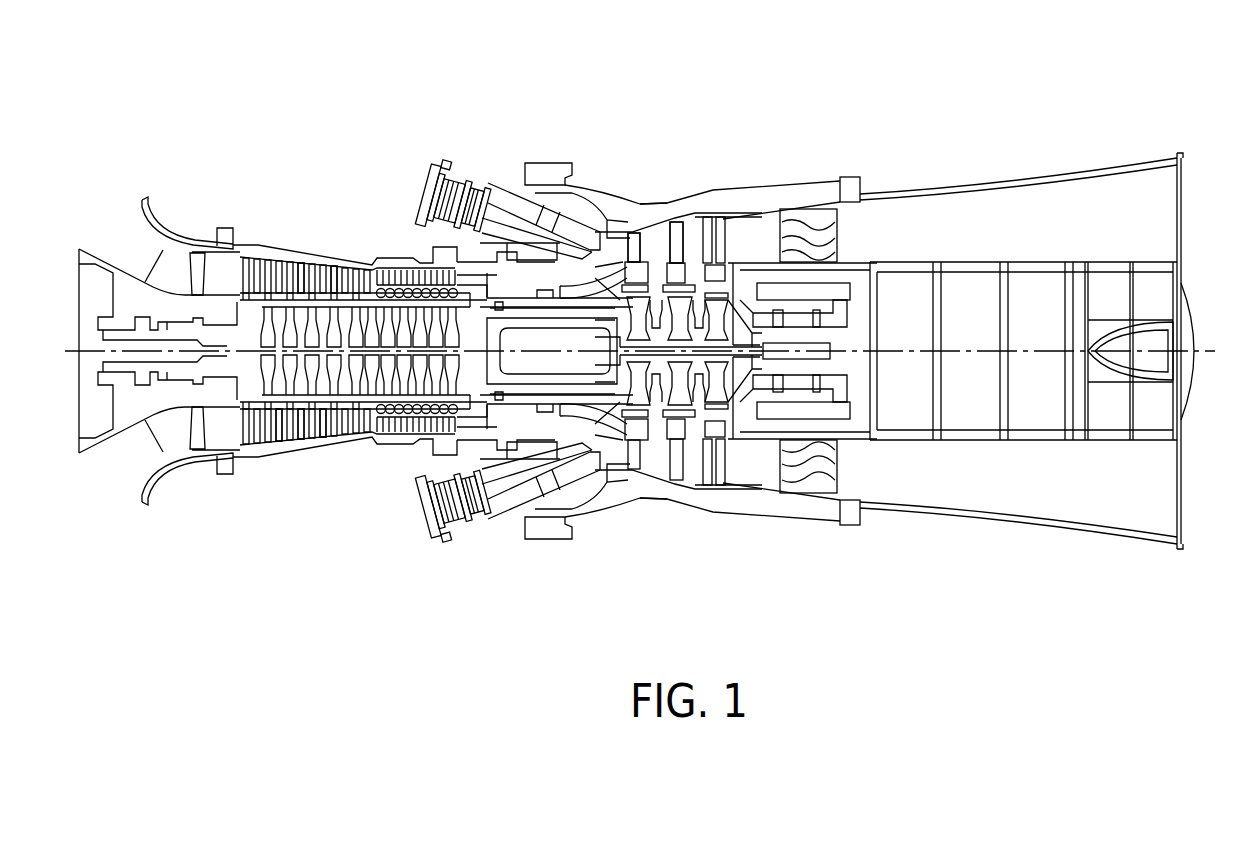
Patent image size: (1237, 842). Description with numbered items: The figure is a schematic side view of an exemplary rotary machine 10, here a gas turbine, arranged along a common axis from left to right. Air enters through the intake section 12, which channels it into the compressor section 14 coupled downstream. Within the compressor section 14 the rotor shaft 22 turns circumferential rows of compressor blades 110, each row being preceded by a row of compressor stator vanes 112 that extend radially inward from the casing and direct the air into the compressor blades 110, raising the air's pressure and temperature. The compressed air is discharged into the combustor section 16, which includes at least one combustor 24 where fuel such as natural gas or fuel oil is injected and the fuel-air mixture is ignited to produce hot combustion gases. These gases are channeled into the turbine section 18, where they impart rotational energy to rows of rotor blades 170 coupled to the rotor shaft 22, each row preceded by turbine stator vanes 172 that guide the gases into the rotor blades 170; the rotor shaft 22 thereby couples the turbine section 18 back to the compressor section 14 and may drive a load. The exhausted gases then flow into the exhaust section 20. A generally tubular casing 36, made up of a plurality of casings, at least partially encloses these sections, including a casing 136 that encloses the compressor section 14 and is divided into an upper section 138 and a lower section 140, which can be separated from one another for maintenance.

The rotary machine 10 is at (446, 102).
The intake section 12 is at (103, 192).
The compressor section 14 is at (308, 222).
The combustor section 16 is at (504, 110).
The turbine section 18 is at (720, 125).
The exhaust section 20 is at (997, 137).
The rotor shaft 22 is at (793, 320).
The combustor 24 is at (511, 515).
The casing 36 is at (740, 200).
The compressor blades 110 is at (299, 432).
The compressor stator vanes 112 is at (279, 435).
The casing 136 is at (334, 262).
The upper section 138 is at (302, 258).
The lower section 140 is at (324, 438).
The rotor blades 170 is at (689, 218).
The turbine stator vanes 172 is at (656, 215).